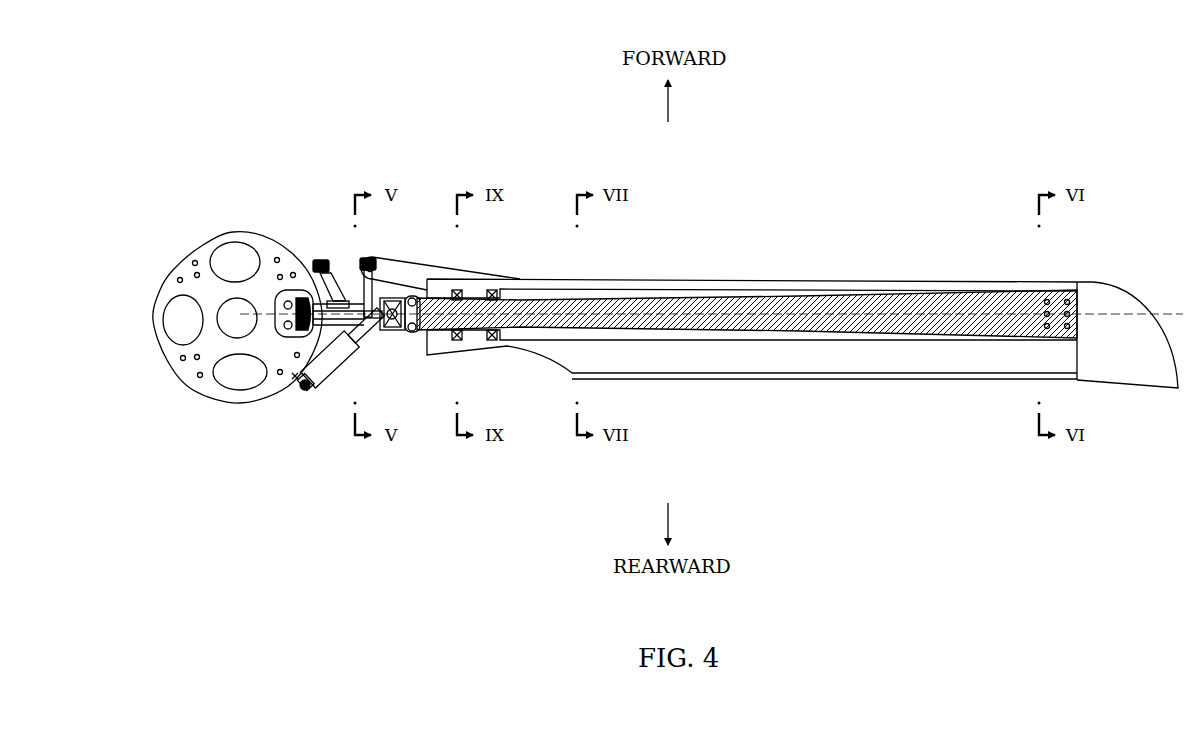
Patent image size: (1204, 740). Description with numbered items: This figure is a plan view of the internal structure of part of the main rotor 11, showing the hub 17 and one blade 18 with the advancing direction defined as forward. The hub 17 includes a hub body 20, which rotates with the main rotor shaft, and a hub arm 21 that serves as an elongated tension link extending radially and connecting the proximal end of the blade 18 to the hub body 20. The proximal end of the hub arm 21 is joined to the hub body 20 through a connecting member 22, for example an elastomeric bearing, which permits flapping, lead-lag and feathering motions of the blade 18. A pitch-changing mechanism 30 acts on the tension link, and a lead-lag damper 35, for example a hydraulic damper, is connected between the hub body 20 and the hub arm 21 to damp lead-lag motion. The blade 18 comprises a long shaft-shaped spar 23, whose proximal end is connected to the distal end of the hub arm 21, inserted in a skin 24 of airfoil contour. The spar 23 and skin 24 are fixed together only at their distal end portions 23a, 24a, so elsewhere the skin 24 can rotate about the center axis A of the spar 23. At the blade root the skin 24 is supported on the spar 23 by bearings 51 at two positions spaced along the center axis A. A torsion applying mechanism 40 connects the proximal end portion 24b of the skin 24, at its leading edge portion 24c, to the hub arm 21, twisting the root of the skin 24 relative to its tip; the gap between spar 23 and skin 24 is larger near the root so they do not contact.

The main rotor 11 is at (1007, 130).
The hub 17 is at (229, 203).
The blade 18 is at (922, 208).
The hub body 20 is at (193, 250).
The hub arm 21 is at (387, 335).
The connecting member 22 is at (282, 340).
The spar 23 is at (725, 298).
The distal end portion of the spar 23a is at (1057, 292).
The skin 24 is at (824, 283).
The distal end portion of the skin 24a is at (1097, 292).
The proximal end portion of the skin 24b is at (425, 348).
The leading edge portion 24c is at (377, 243).
The pitch-changing mechanism 30 is at (317, 243).
The lead-lag damper 35 is at (332, 373).
The torsion applying mechanism 40 is at (377, 243).
The bearings 51 is at (463, 292).
The center axis A is at (1172, 313).